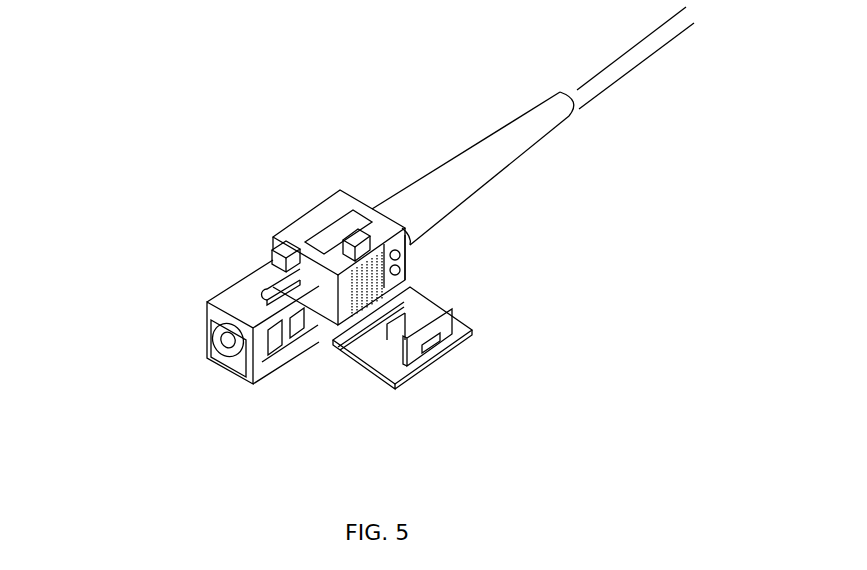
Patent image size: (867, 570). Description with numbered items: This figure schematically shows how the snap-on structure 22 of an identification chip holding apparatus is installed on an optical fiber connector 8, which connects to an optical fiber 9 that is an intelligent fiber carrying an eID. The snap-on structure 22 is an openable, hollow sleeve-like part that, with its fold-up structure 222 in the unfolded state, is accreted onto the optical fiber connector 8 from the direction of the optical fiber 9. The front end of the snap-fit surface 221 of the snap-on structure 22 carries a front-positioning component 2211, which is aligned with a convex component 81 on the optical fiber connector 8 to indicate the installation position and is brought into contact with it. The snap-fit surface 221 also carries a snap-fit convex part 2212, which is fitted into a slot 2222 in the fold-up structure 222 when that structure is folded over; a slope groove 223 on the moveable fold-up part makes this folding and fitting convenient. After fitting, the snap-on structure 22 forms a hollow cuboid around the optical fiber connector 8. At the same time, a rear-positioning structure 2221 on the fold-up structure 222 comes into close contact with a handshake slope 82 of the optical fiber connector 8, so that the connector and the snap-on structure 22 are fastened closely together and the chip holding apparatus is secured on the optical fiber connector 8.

The optical fiber 9 is at (485, 138).
The snap-on structure 22 is at (272, 235).
The snap-fit surface 221 is at (350, 200).
The snap-fit convex part 2212 is at (350, 235).
The front-positioning component 2211 is at (290, 272).
The convex component 81 is at (273, 292).
The optical fiber connector 8 is at (245, 318).
The handshake slope 82 is at (378, 267).
The slope groove 223 is at (410, 285).
The fold-up structure 222 is at (397, 382).
The rear-positioning structure 2221 is at (383, 362).
The slot 2222 is at (437, 340).